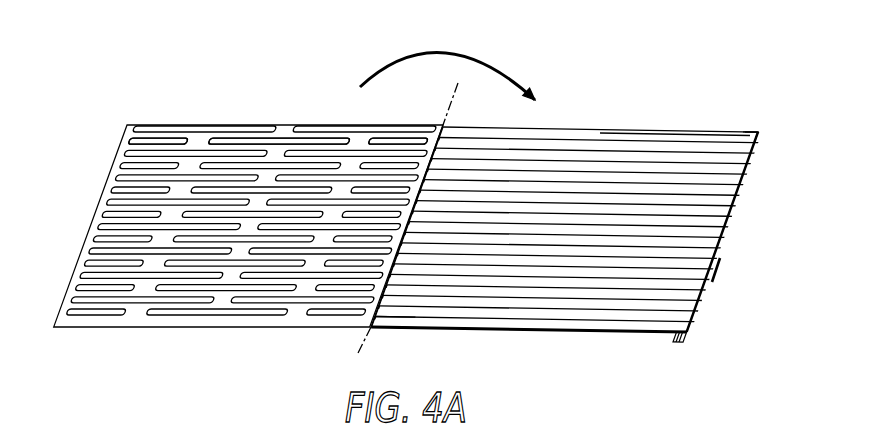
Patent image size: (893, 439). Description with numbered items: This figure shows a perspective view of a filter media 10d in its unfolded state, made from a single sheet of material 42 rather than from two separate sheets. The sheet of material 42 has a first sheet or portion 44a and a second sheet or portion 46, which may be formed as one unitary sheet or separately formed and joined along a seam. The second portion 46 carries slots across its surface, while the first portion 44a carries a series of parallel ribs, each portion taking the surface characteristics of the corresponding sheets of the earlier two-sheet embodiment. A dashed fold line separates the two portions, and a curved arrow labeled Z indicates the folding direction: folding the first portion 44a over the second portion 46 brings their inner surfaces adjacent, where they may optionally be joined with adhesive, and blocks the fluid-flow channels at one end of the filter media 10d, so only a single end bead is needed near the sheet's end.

The filter media 10d is at (517, 36).
The second sheet or portion 46 is at (226, 108).
The sheet of material 42 is at (445, 123).
The first sheet or portion 44a is at (591, 110).